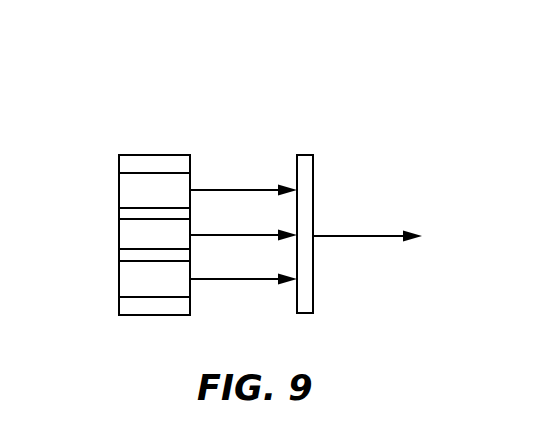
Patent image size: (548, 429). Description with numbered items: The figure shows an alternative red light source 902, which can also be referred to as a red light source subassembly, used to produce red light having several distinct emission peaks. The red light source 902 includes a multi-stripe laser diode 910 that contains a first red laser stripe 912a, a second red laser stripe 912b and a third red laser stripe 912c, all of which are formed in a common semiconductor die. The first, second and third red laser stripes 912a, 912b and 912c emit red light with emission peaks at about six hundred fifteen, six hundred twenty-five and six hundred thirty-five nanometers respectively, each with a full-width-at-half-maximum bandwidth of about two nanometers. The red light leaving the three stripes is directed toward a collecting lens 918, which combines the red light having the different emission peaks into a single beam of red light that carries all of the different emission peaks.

The red light source 902 is at (112, 66).
The multi-stripe laser diode 910 is at (157, 154).
The first red laser stripe 912a is at (180, 202).
The second red laser stripe 912b is at (180, 246).
The third red laser stripe 912c is at (180, 291).
The collecting lens 918 is at (302, 154).